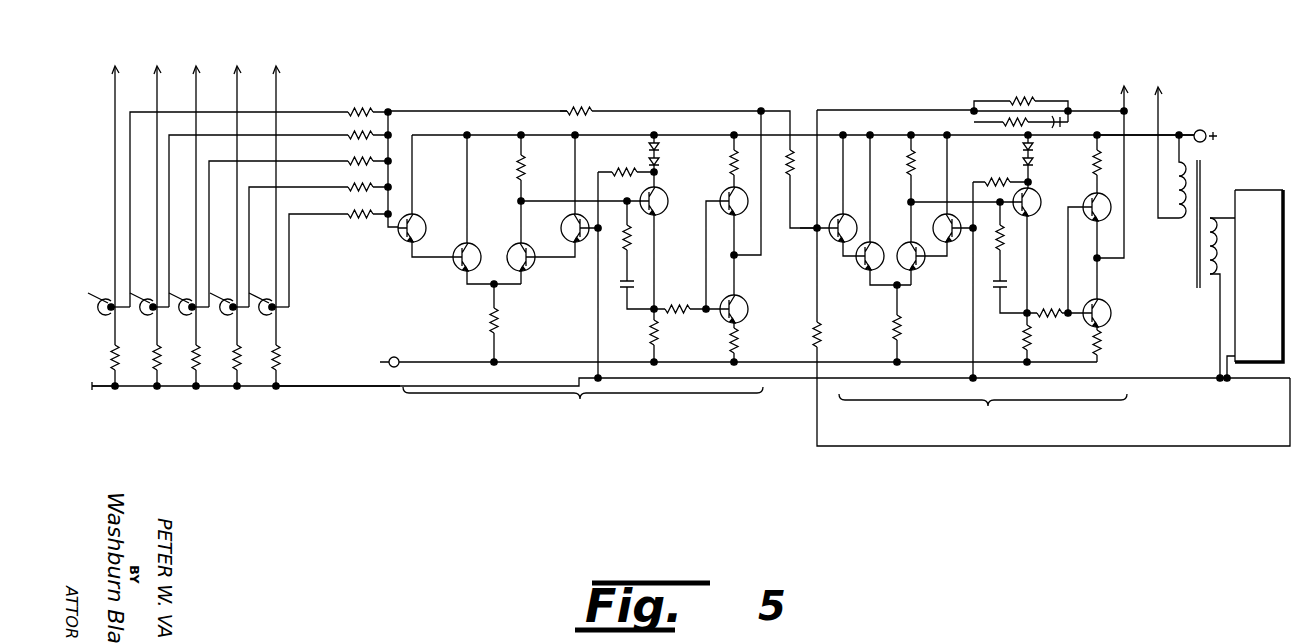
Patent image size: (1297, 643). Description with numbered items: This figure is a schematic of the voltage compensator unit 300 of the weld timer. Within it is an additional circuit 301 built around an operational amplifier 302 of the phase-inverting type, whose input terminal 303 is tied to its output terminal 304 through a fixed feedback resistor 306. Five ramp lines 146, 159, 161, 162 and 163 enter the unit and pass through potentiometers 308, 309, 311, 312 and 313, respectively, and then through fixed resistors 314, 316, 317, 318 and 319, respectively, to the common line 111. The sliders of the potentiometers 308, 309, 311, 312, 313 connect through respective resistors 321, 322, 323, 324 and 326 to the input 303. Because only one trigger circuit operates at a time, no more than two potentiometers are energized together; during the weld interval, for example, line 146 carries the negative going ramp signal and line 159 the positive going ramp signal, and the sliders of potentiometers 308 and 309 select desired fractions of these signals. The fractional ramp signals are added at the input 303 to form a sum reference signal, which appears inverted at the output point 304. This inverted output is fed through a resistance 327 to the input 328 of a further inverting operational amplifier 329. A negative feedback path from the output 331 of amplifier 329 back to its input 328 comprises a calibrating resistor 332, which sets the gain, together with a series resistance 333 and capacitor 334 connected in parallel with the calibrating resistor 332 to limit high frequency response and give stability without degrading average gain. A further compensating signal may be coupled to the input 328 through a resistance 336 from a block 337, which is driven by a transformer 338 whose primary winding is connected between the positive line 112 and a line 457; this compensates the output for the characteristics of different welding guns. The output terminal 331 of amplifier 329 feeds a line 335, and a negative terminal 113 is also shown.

The ramp line 146 is at (112, 90).
The ramp line 159 is at (157, 90).
The ramp line 161 is at (196, 90).
The ramp line 162 is at (237, 90).
The ramp line 163 is at (276, 90).
The voltage compensator unit 300 is at (298, 400).
The additional circuit 301 is at (75, 355).
The operational amplifier 302 is at (680, 405).
The input terminal 303 is at (398, 236).
The output terminal 304 is at (742, 263).
The fixed feedback resistor 306 is at (568, 108).
The potentiometer 308 is at (102, 311).
The potentiometer 309 is at (144, 311).
The potentiometer 311 is at (184, 311).
The potentiometer 312 is at (224, 311).
The potentiometer 313 is at (264, 311).
The fixed resistor 314 is at (114, 368).
The fixed resistor 316 is at (155, 368).
The fixed resistor 317 is at (195, 368).
The fixed resistor 318 is at (235, 368).
The fixed resistor 319 is at (275, 368).
The resistor 321 is at (366, 94).
The resistor 322 is at (338, 134).
The resistor 323 is at (338, 159).
The resistor 324 is at (338, 185).
The resistor 326 is at (338, 211).
The resistance 327 is at (787, 175).
The input 328 is at (814, 235).
The operational amplifier 329 is at (1058, 409).
The output terminal 331 is at (1102, 261).
The calibrating resistor 332 is at (1022, 101).
The series resistance 333 is at (1002, 122).
The capacitor 334 is at (1064, 122).
The line 335 is at (1124, 90).
The resistance 336 is at (820, 342).
The block 337 is at (1260, 200).
The transformer 338 is at (1201, 180).
The line 457 is at (1162, 103).
The common line 111 is at (360, 393).
The positive line 112 is at (414, 137).
The negative terminal 113 is at (408, 360).